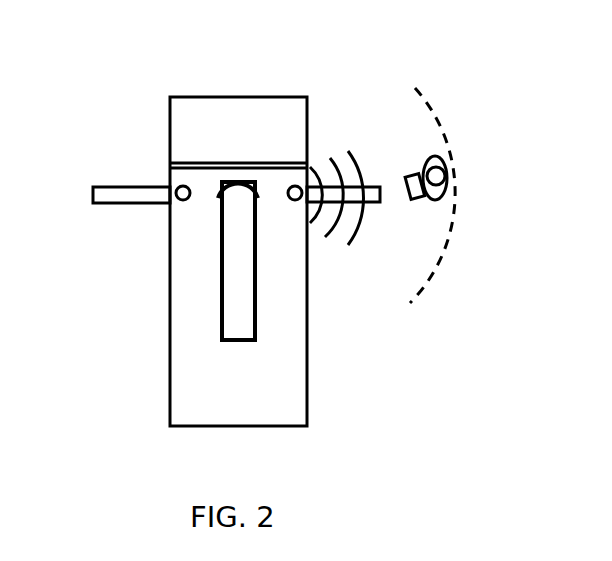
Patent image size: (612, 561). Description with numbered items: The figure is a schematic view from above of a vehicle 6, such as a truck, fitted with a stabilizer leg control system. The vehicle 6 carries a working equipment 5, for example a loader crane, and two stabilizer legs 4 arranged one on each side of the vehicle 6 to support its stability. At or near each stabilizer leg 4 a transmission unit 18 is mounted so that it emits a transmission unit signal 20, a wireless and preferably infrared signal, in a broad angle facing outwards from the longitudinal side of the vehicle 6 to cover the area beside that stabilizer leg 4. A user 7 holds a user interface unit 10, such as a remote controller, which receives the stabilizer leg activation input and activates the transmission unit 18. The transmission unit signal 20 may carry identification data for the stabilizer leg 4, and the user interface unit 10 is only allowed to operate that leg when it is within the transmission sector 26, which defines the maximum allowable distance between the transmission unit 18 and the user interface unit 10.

The vehicle 6 is at (107, 96).
The stabilizer leg 4 is at (125, 193).
The transmission unit 18 is at (178, 188).
The working equipment 5 is at (238, 248).
The transmission unit signal 20 is at (340, 170).
The user interface unit 10 is at (410, 200).
The user 7 is at (437, 177).
The transmission sector 26 is at (458, 208).